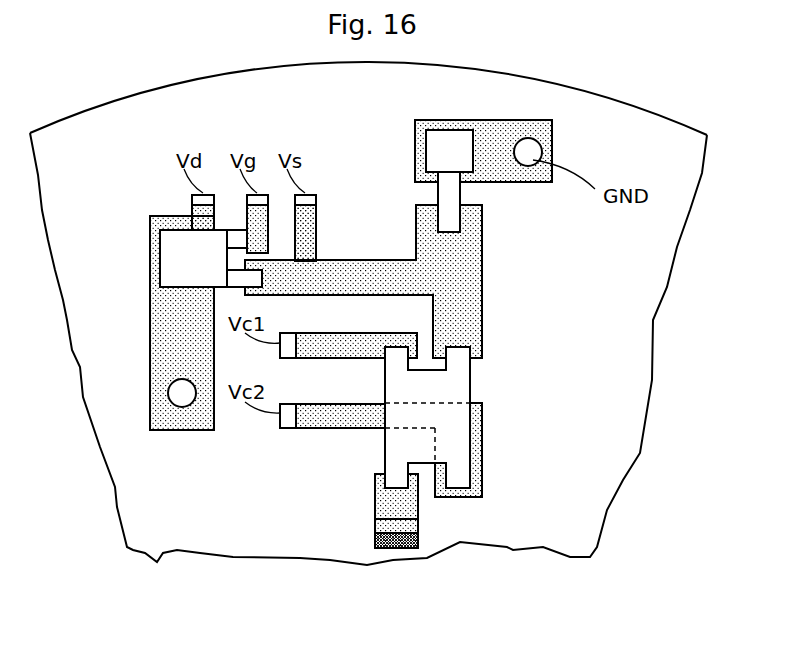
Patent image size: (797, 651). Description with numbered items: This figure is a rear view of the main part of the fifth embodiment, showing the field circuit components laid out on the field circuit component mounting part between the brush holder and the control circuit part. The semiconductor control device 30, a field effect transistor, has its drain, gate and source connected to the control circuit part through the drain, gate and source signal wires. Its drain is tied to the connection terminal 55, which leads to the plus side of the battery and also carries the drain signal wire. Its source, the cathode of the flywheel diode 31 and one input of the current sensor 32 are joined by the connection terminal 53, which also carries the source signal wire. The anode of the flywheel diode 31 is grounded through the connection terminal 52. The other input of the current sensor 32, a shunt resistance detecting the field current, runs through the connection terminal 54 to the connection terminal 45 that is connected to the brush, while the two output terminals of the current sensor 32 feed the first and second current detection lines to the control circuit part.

The semiconductor control device 30 is at (160, 237).
The flywheel diode 31 is at (432, 130).
The current sensor 32 is at (470, 385).
The connection terminal 45 is at (397, 550).
The connection terminal 52 is at (553, 140).
The connection terminal 53 is at (483, 272).
The connection terminal 54 is at (414, 512).
The connection terminal 55 is at (160, 330).